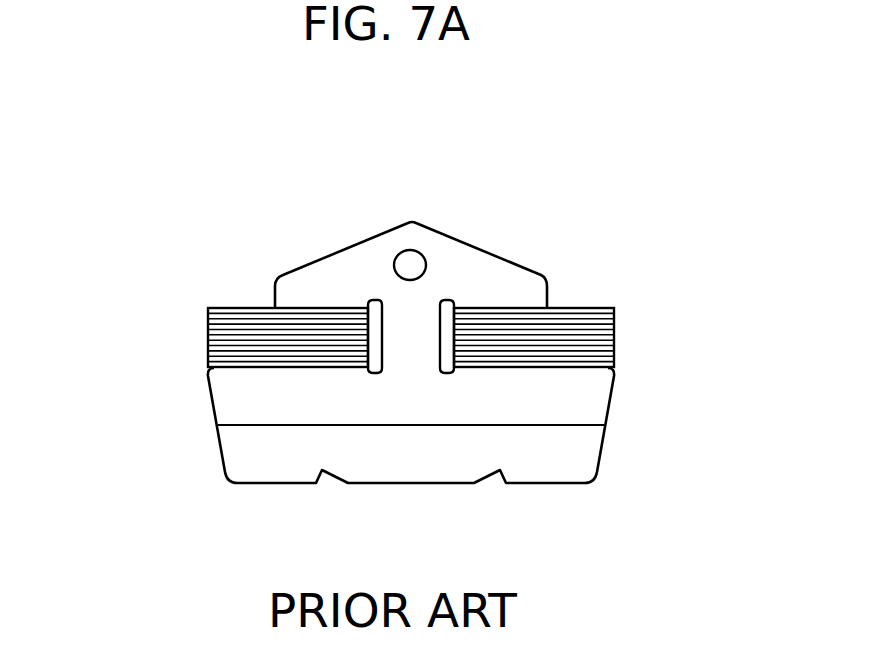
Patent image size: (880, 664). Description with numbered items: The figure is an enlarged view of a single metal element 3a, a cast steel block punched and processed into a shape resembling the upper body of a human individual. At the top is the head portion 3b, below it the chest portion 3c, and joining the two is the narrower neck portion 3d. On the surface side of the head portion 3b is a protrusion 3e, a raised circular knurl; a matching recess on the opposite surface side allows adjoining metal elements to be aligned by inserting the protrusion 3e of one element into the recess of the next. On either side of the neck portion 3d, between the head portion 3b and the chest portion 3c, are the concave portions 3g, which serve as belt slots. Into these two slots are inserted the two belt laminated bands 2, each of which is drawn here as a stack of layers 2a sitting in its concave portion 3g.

The belt laminated band 2 is at (410, 344).
The winding wire turns 2a is at (208, 311).
The metal element 3a is at (502, 249).
The head portion 3b is at (358, 263).
The chest portion 3c is at (297, 467).
The neck portion 3d is at (395, 350).
The protrusion 3e is at (410, 262).
The concave portion 3g is at (258, 299).